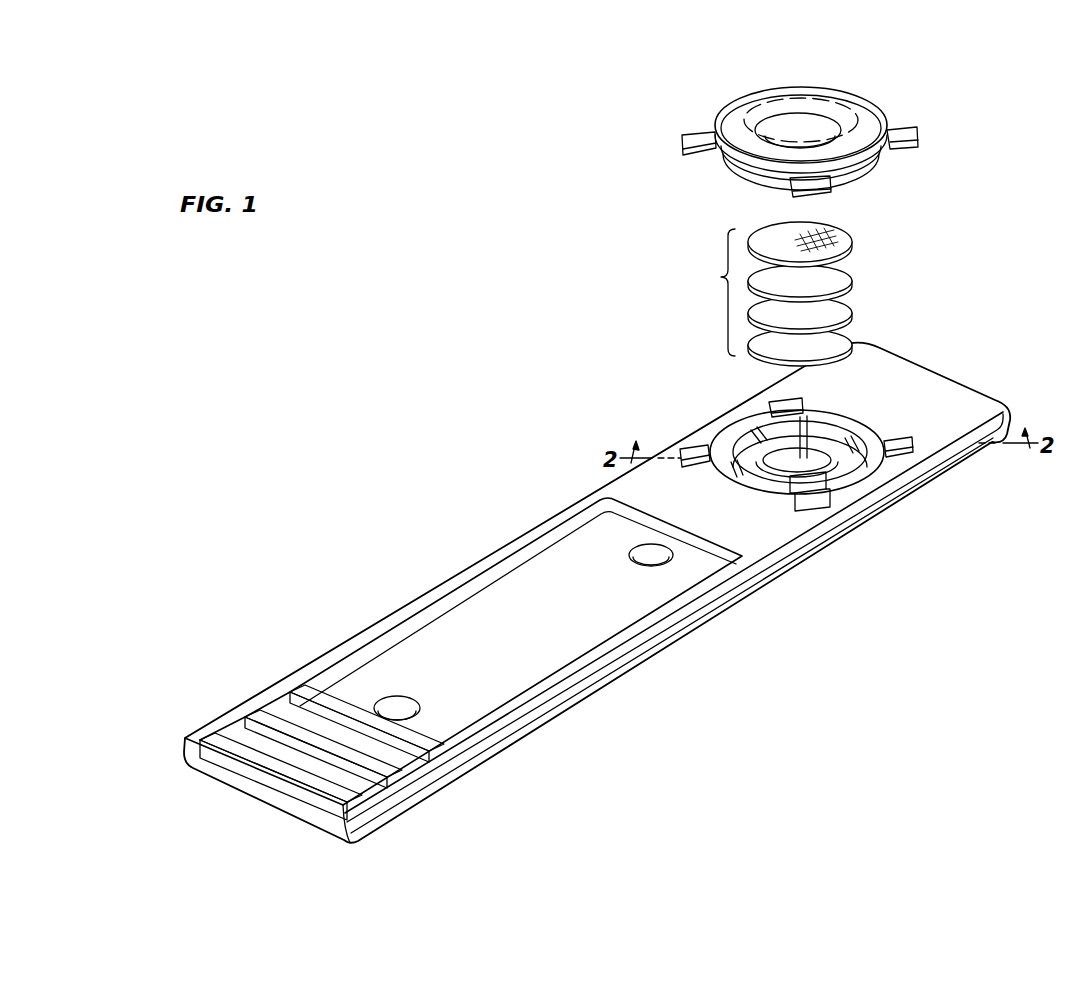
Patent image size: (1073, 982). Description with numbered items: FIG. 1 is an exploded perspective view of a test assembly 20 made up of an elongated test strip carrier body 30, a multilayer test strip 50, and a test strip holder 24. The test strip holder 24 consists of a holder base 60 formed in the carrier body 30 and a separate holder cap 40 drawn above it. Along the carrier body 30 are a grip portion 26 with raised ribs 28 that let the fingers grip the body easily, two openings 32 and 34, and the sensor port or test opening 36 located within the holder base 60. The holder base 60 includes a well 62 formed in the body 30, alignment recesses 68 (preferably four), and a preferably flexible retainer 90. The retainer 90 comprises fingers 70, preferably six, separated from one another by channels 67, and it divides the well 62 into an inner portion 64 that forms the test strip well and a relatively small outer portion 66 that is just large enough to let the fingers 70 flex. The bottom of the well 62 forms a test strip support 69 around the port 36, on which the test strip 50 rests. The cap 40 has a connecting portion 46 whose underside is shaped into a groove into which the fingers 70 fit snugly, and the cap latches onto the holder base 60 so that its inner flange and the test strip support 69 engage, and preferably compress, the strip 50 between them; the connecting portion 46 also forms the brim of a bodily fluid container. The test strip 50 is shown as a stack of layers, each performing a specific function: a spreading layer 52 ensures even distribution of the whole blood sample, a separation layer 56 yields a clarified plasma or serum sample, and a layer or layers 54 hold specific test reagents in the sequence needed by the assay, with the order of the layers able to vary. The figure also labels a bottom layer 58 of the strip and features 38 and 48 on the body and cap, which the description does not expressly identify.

The test assembly 20 is at (493, 485).
The test strip holder 24 is at (804, 70).
The grip portion 26 is at (250, 803).
The raised ribs 28 is at (318, 698).
The test strip carrier body 30 is at (823, 548).
The opening 32 is at (410, 704).
The opening 34 is at (637, 556).
The sensor port or test opening 36 is at (791, 500).
The recessed top surface 38 is at (538, 635).
The holder cap 40 is at (743, 110).
The connecting portion 46 is at (837, 100).
The cap locking tab 48 is at (903, 130).
The test strip 50 is at (711, 292).
The spreading layer 52 is at (842, 245).
The reagent layer 54 is at (843, 283).
The separation layer 56 is at (843, 313).
The third absorbent pad 58 is at (842, 346).
The holder base 60 is at (888, 407).
The well 62 is at (716, 437).
The inner portion (test strip well) 64 is at (829, 484).
The outer portion 66 is at (873, 469).
The channels 67 is at (754, 432).
The alignment recesses 68 is at (907, 457).
The test strip support 69 is at (807, 430).
The fingers 70 is at (768, 409).
The retainer 90 is at (842, 431).